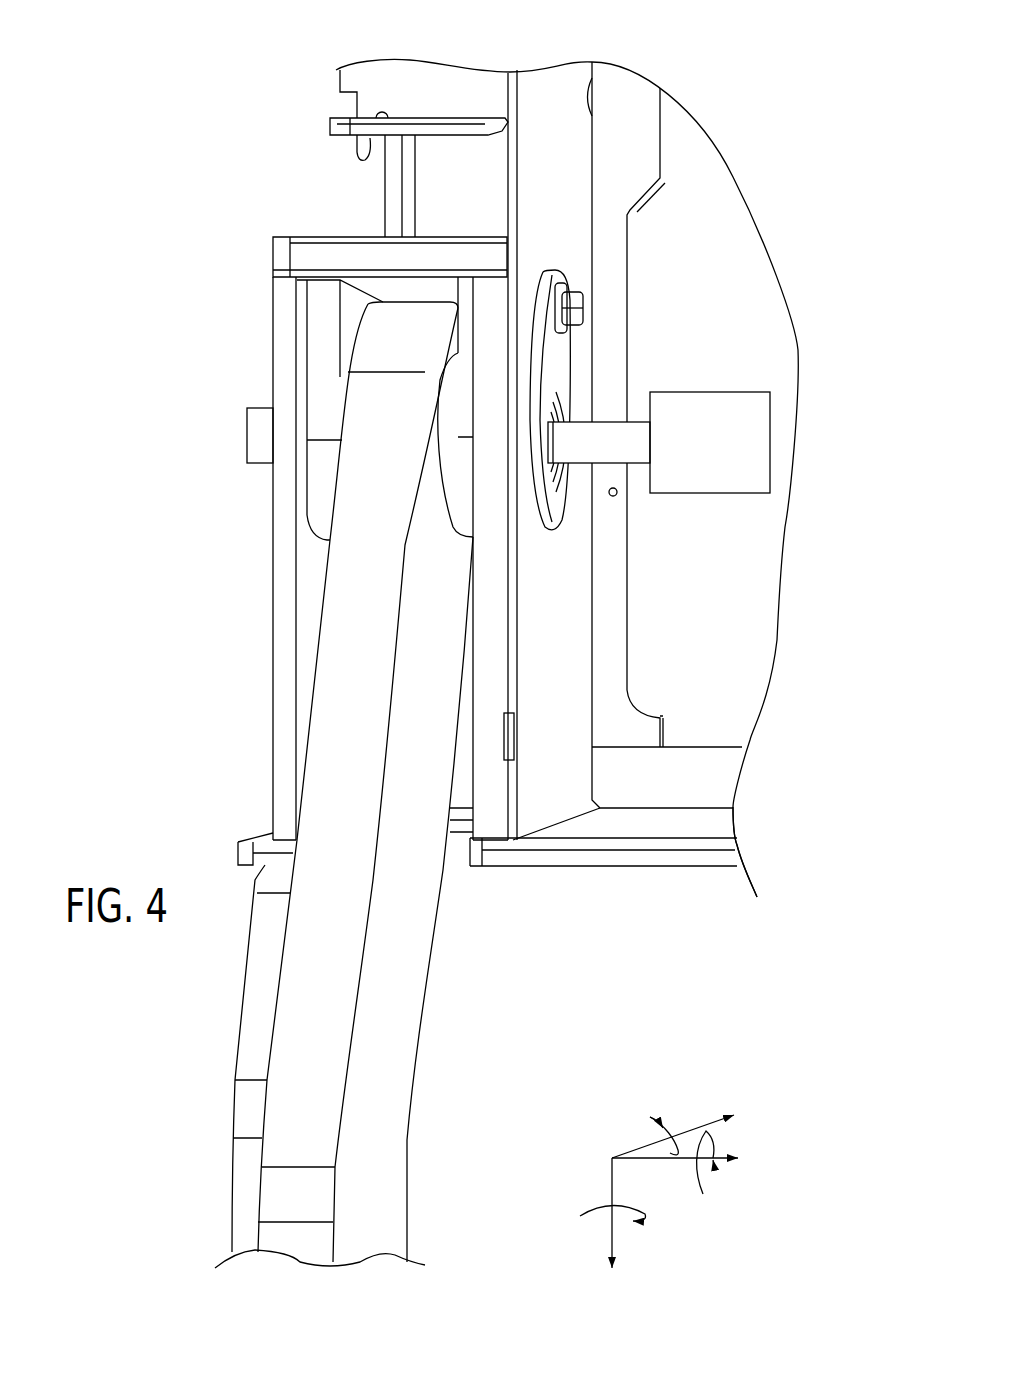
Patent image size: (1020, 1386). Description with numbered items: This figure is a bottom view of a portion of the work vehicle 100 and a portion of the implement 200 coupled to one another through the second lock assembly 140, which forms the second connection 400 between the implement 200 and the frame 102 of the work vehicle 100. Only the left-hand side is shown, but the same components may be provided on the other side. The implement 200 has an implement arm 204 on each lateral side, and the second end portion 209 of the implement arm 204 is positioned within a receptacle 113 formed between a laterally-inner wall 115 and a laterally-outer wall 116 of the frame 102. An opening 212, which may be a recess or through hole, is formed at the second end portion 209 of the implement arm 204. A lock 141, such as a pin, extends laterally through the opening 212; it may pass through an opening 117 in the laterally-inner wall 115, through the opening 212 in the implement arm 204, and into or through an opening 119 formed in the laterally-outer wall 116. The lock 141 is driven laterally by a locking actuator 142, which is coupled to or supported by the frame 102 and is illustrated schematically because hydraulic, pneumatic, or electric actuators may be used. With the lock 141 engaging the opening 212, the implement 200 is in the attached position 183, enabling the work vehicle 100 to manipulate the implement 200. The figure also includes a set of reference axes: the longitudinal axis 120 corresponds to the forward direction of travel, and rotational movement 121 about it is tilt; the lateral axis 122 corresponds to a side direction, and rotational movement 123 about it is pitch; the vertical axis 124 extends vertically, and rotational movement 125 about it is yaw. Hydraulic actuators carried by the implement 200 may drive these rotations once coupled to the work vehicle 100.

The work vehicle 100 is at (693, 907).
The frame 102 is at (660, 815).
The receptacle 113 is at (432, 287).
The laterally-inner wall 115 is at (563, 660).
The laterally-outer wall 116 is at (275, 615).
The opening 117 is at (560, 388).
The opening 119 is at (268, 463).
The longitudinal axis 120 is at (610, 1243).
The rotational movement 121 is at (602, 1202).
The lateral axis 122 is at (677, 1162).
The rotational movement 123 is at (705, 1193).
The vertical axis 124 is at (717, 1113).
The rotational movement 125 is at (648, 1116).
The second lock assembly 140 is at (643, 367).
The lock 141 is at (253, 428).
The locking actuator 142 is at (697, 391).
The attached position 183 is at (163, 1177).
The implement 200 is at (156, 1230).
The implement arm 204 is at (325, 768).
The second end portion 209 is at (422, 524).
The opening 212 is at (456, 497).
The second connection 400 is at (232, 251).